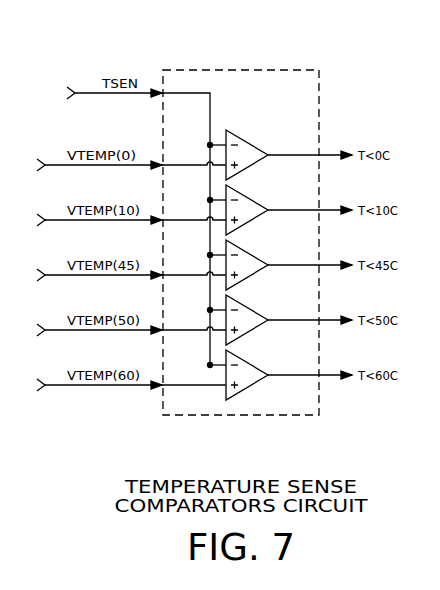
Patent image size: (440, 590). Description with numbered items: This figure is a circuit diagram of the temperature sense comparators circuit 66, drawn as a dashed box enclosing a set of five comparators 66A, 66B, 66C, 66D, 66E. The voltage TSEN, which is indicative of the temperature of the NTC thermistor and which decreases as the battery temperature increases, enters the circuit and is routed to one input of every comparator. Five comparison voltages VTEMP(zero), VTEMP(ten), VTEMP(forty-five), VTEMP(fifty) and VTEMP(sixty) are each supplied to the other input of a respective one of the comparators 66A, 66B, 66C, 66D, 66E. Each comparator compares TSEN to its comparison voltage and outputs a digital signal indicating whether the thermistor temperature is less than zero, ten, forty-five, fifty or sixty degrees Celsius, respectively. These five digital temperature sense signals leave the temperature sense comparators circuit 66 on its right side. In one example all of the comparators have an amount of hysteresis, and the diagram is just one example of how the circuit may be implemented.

The temperature sense comparators circuit 66 is at (239, 69).
The comparator 66A is at (247, 136).
The comparator 66B is at (247, 191).
The comparator 66C is at (247, 246).
The comparator 66D is at (247, 301).
The comparator 66E is at (247, 356).